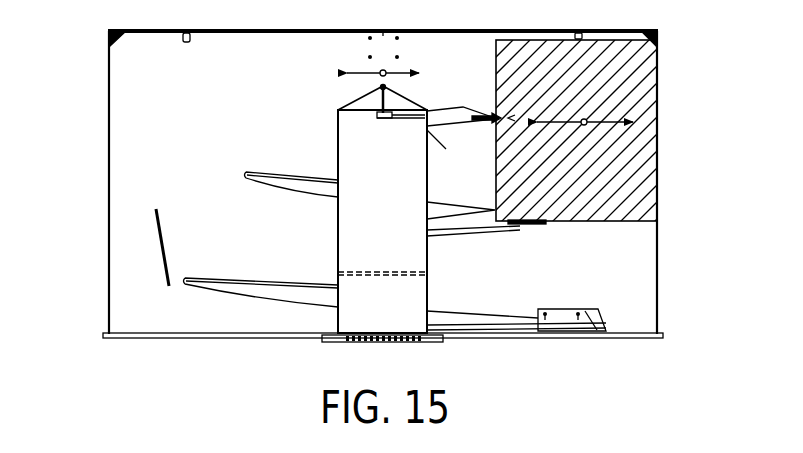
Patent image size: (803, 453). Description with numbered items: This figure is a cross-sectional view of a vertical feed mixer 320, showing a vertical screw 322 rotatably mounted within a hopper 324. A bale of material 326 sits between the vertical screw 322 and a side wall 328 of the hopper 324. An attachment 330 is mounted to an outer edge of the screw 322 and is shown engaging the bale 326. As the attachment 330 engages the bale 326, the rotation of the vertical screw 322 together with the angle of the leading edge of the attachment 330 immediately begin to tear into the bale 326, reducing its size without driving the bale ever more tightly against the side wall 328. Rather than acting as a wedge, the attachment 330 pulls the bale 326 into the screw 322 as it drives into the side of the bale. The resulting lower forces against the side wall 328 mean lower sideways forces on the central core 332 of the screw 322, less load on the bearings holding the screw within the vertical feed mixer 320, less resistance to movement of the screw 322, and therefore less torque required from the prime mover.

The vertical feed mixer 320 is at (172, 136).
The vertical screw 322 is at (293, 173).
The hopper 324 is at (265, 246).
The bale of material 326 is at (613, 173).
The side wall 328 is at (657, 96).
The attachment 330 is at (498, 103).
The central core 332 is at (406, 219).